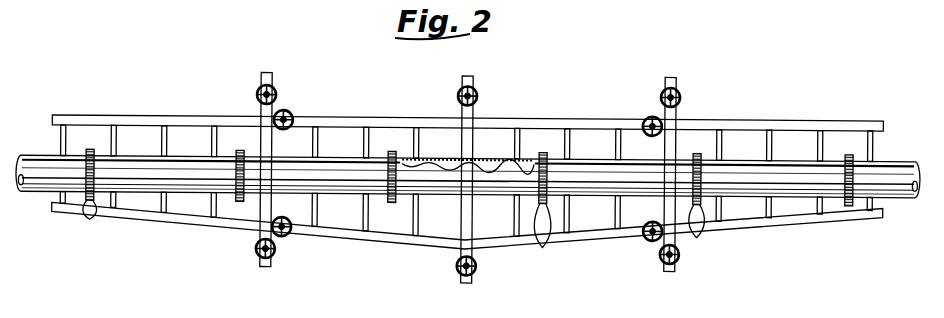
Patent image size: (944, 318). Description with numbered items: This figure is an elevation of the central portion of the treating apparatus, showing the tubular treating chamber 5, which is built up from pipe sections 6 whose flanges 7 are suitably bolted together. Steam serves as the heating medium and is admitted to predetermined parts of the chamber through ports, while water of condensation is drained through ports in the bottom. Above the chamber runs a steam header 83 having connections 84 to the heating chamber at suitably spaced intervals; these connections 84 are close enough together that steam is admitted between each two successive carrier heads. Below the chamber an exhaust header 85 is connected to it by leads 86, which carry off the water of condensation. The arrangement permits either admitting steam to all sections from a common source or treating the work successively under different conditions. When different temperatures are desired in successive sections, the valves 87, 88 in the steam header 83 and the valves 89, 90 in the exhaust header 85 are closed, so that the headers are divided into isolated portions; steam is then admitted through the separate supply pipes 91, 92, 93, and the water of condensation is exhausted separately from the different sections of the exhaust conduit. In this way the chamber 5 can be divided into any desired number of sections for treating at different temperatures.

The treating chamber 5 is at (491, 166).
The pipe sections 6 is at (146, 188).
The flanges 7 is at (88, 218).
The steam header 83 is at (584, 118).
The connections 84 is at (615, 142).
The exhaust header 85 is at (602, 237).
The leads 86 is at (462, 204).
The valve 87 is at (293, 113).
The valve 88 is at (649, 116).
The valve 89 is at (289, 236).
The valve 90 is at (653, 240).
The supply pipe 91 is at (272, 77).
The supply pipe 92 is at (473, 81).
The supply pipe 93 is at (677, 81).